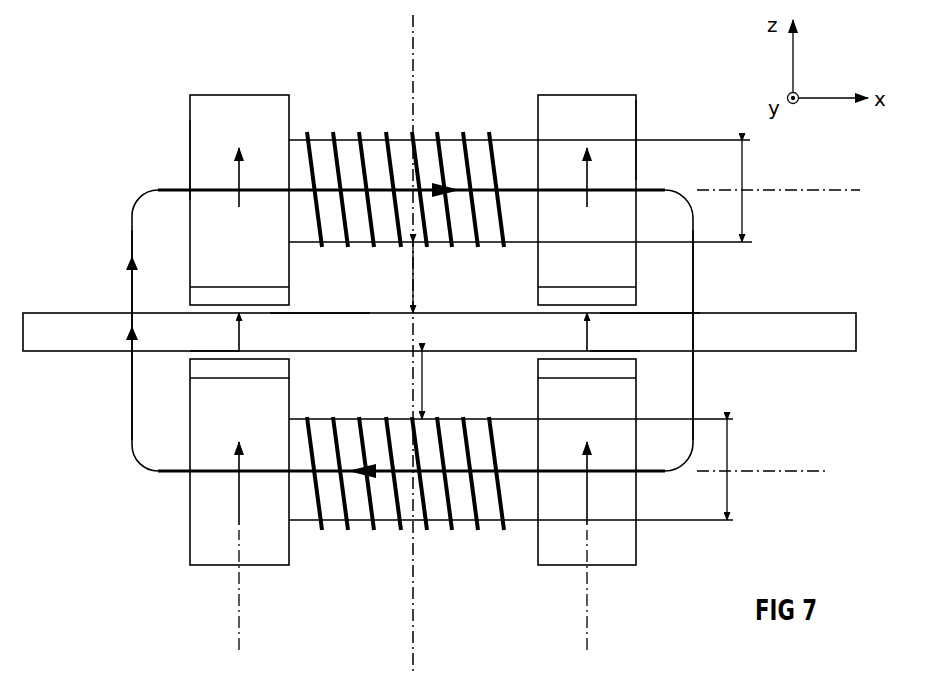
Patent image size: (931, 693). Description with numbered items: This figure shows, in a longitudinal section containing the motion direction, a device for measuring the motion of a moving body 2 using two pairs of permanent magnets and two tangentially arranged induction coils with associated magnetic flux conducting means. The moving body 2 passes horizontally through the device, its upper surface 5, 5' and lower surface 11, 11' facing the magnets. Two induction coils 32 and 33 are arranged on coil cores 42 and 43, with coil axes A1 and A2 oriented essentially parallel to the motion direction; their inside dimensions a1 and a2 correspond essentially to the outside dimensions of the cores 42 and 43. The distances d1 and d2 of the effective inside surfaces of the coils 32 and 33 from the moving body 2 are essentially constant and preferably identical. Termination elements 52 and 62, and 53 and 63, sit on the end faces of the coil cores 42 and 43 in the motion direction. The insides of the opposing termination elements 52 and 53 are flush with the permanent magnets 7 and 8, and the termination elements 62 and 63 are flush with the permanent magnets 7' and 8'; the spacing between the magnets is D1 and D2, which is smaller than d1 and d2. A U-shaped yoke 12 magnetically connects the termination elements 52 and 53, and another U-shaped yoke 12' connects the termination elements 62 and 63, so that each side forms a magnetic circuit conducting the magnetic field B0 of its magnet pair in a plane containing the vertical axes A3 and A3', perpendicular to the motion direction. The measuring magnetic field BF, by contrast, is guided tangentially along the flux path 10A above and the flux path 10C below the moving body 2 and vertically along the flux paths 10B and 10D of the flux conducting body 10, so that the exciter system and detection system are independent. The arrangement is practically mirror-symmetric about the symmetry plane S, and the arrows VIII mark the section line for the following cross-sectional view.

The moving body 2 is at (65, 328).
The upper surface of strip 5 is at (320, 308).
The upper surface of strip (right) 5' is at (668, 308).
The permanent magnet 7 is at (256, 277).
The permanent magnet 7' is at (568, 290).
The permanent magnet 8 is at (256, 387).
The permanent magnet 8' is at (564, 372).
The magnetic yoke / core body 10 is at (132, 220).
The flux path 10A is at (377, 183).
The flux path 10B is at (695, 385).
The flux path 10C is at (462, 480).
The flux path 10D is at (132, 247).
The lower surface of strip 11 is at (191, 368).
The lower surface of strip (right) 11' is at (630, 377).
The U-shaped yoke 12 is at (152, 160).
The U-shaped yoke 12' is at (678, 140).
The induction coil 32 is at (493, 163).
The induction coil 33 is at (312, 505).
The coil core 42 is at (323, 150).
The coil core 43 is at (513, 498).
The termination element 52 is at (238, 112).
The termination element 53 is at (208, 546).
The termination element 62 is at (592, 112).
The termination element 63 is at (617, 545).
The magnetic field B0 is at (238, 197).
The measuring magnetic field BF is at (450, 182).
The coil axis A1 is at (803, 190).
The coil axis A2 is at (795, 470).
The axis of termination elements A3 is at (213, 590).
The axis of termination elements A3' is at (616, 590).
The inside dimension a1 is at (744, 191).
The inside dimension a2 is at (728, 470).
The distance d1 is at (418, 275).
The distance d2 is at (427, 385).
The spacing D1 is at (277, 309).
The spacing D2 is at (250, 355).
The symmetry plane S is at (413, 595).
The section line VIII is at (412, 32).